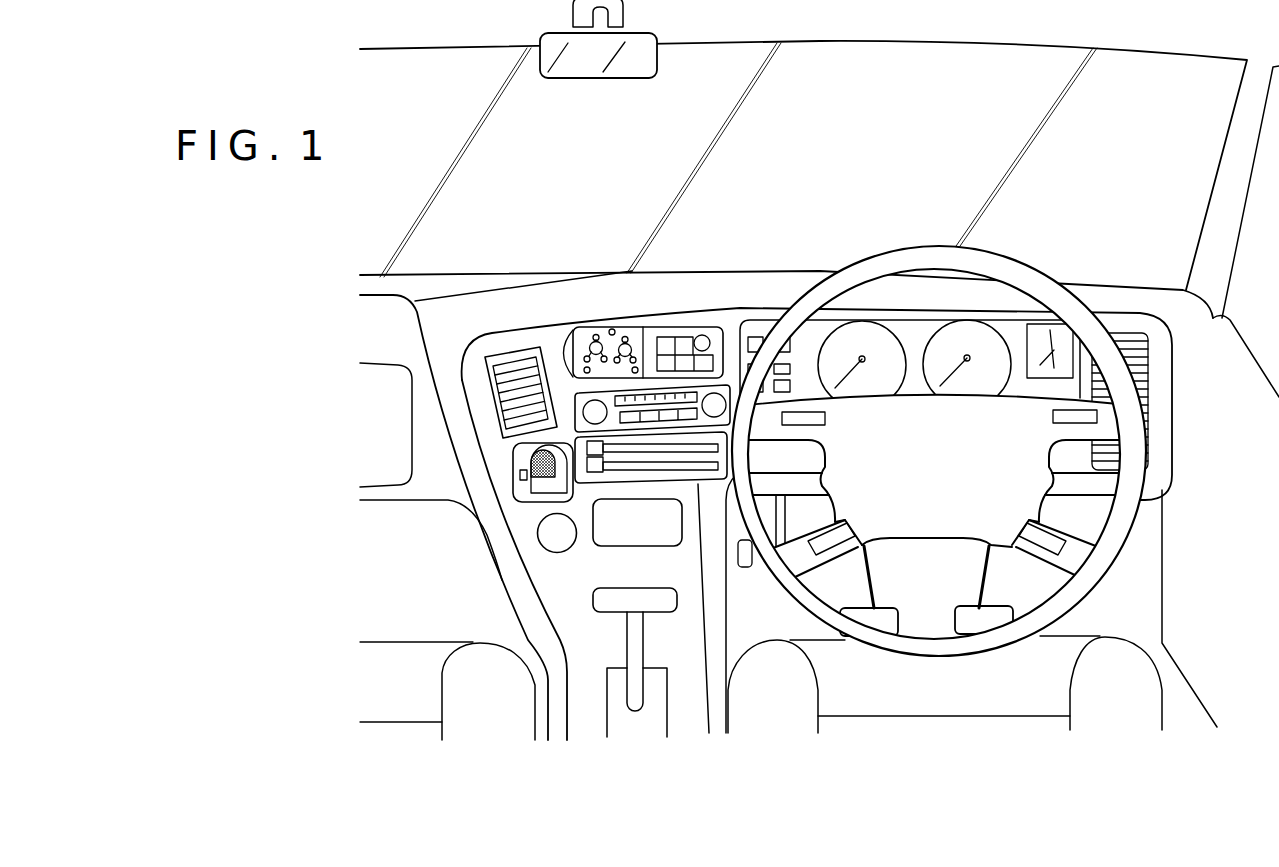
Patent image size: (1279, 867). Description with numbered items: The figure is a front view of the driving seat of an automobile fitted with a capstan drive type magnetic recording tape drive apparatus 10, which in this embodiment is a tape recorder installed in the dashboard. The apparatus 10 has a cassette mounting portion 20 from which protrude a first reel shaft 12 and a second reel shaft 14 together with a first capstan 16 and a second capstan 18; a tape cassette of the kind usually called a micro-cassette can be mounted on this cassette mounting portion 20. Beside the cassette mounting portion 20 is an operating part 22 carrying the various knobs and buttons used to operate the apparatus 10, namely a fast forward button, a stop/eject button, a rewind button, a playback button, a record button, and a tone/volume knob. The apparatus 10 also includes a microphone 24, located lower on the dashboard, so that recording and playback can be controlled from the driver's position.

The capstan drive type magnetic recording tape drive apparatus 10 is at (610, 313).
The first reel shaft 12 is at (593, 335).
The second reel shaft 14 is at (626, 337).
The first capstan 16 is at (584, 368).
The second capstan 18 is at (632, 370).
The cassette mounting portion 20 is at (603, 334).
The operating part 22 is at (689, 331).
The microphone 24 is at (553, 484).